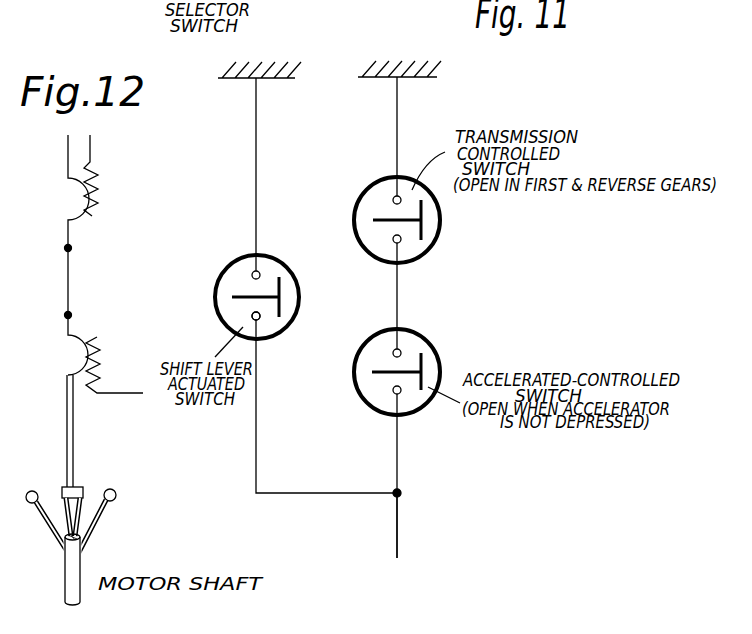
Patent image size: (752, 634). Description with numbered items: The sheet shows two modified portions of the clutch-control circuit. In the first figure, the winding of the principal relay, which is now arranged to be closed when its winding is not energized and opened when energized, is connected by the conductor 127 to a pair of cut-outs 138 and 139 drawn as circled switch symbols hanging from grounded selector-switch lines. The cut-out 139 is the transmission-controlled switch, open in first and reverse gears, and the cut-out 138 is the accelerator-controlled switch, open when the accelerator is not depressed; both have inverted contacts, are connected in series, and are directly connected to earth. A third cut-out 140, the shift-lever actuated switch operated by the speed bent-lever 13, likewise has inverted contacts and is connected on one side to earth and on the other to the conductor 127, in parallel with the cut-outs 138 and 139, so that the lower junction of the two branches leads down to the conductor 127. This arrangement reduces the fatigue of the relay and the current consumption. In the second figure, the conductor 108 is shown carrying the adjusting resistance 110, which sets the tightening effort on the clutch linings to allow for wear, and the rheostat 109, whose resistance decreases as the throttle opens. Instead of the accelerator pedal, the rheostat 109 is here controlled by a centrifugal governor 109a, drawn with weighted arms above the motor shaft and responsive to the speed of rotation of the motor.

In FIG. 11, the speed bent-lever 13 is at (217, 271).
In FIG. 11, the cut-out 140 is at (226, 324).
In FIG. 11, the cut-out 139 is at (440, 228).
In FIG. 11, the cut-out 138 is at (440, 363).
In FIG. 11, the conductor 127 is at (398, 530).
In FIG. 12, the adjusting resistance 110 is at (77, 208).
In FIG. 12, the rheostat 109 is at (80, 364).
In FIG. 12, the conductor 108 is at (114, 382).
In FIG. 12, the centrifugal governor 109a is at (102, 539).